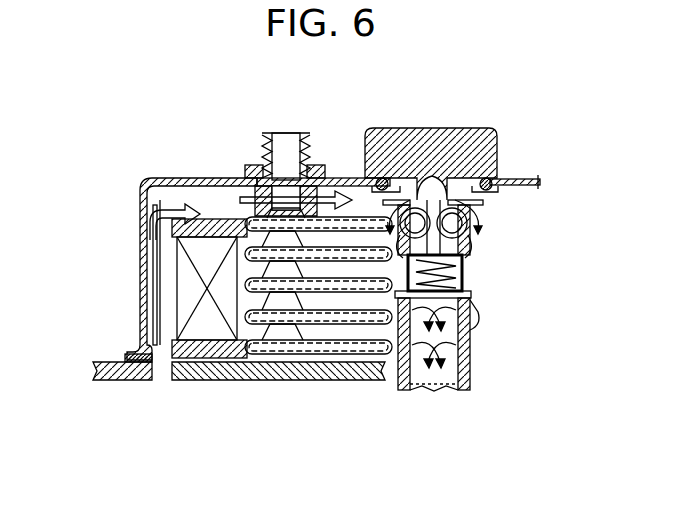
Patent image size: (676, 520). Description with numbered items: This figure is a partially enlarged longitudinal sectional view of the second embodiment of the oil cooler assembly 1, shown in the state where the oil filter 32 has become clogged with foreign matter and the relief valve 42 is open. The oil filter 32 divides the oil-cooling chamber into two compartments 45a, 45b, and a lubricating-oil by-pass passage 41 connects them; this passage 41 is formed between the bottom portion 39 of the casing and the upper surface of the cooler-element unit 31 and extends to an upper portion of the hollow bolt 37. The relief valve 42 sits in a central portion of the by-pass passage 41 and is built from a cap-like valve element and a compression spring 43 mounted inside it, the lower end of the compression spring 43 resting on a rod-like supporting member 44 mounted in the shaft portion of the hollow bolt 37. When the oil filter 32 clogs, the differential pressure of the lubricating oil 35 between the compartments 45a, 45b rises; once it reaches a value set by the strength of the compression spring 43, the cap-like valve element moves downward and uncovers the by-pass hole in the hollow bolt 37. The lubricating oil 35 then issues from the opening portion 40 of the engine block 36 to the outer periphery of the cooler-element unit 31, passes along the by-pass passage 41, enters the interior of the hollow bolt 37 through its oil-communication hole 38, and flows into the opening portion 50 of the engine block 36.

The oil cooler assembly 1 is at (521, 188).
The cooler-element unit 31 is at (357, 237).
The oil filter 32 is at (206, 235).
The lubricating oil 35 is at (163, 215).
The engine block 36 is at (290, 364).
The hollow bolt 37 is at (470, 128).
The oil-communication hole 38 is at (470, 340).
The bottom portion of the casing 39 is at (180, 177).
The opening portion of the engine block 40 is at (162, 368).
The lubricating-oil by-pass passage 41 is at (230, 200).
The relief valve 42 is at (466, 241).
The compression spring 43 is at (463, 272).
The rod-like supporting member 44 is at (470, 294).
The compartment of the oil-cooling chamber 45a is at (160, 282).
The compartment of the oil-cooling chamber 45b is at (233, 360).
The opening portion of the engine block 50 is at (422, 390).